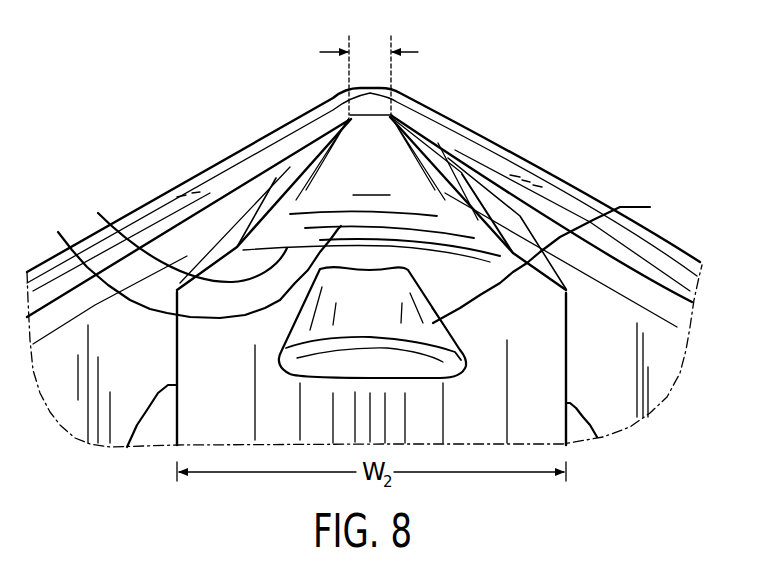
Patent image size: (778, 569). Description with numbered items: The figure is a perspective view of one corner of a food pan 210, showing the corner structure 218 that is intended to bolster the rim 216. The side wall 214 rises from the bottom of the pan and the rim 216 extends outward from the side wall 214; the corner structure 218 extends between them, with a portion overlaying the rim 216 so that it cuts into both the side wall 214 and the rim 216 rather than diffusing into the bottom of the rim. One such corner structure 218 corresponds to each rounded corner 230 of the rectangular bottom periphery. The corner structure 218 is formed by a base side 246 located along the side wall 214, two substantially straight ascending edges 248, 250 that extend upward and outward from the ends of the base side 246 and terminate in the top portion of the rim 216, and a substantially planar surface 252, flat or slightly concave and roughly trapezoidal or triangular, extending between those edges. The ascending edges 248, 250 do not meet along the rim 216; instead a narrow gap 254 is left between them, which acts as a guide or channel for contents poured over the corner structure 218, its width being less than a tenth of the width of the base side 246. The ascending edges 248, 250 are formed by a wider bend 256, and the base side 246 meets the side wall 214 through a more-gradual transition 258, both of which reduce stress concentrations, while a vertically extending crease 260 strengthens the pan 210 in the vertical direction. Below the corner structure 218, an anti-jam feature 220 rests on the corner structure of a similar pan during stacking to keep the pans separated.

The food pan 210 is at (684, 127).
The side wall 214 is at (498, 412).
The rim 216 is at (453, 140).
The corner structure 218 is at (546, 141).
The anti-jam feature 220 is at (466, 257).
The rounded corner 230 is at (494, 510).
The base side 246 is at (182, 234).
The ascending edge 248 is at (237, 213).
The ascending edge 250 is at (510, 217).
The substantially planar surface 252 is at (390, 163).
The gap 254 is at (372, 112).
The wider bend 256 is at (308, 163).
The more-gradual transition 258 is at (184, 263).
The vertically extending crease 260 is at (127, 447).